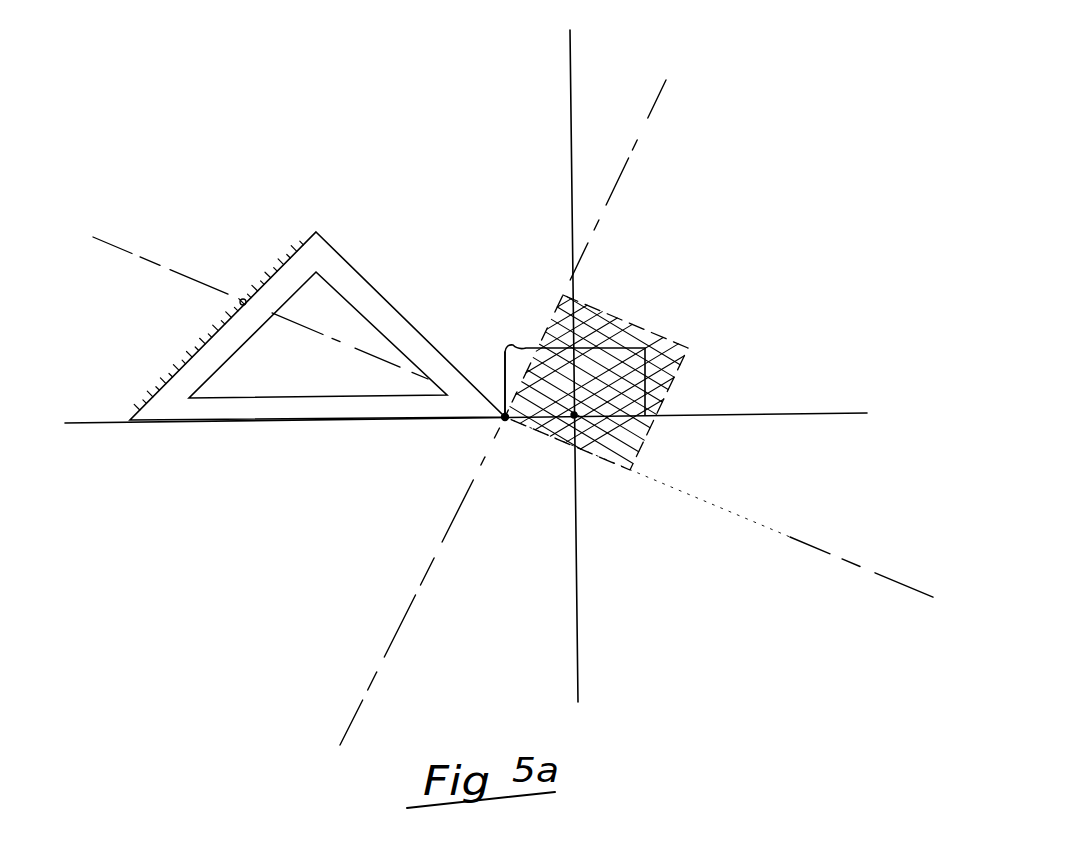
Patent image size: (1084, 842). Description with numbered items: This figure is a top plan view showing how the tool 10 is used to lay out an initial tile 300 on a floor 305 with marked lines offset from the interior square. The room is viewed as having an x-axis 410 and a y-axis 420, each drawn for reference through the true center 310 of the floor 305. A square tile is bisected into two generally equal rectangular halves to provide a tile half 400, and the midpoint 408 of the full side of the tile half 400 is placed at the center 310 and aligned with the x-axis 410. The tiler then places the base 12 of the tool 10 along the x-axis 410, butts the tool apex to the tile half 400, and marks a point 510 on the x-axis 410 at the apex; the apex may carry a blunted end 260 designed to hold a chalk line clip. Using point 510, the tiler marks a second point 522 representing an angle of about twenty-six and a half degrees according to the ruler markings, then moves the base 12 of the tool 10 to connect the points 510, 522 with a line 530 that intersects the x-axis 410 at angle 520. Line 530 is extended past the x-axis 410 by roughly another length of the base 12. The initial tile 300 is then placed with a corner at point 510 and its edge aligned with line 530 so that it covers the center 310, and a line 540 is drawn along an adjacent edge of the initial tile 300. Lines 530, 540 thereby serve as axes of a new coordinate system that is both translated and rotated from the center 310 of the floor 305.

The tool 10 is at (330, 158).
The base 12 is at (265, 410).
The blunted end 260 is at (483, 407).
The initial tile 300 is at (668, 392).
The floor 305 is at (838, 157).
The center 310 is at (574, 416).
The tile half 400 is at (505, 417).
The midpoint 408 is at (574, 415).
The x-axis 410 is at (835, 413).
The y-axis 420 is at (571, 52).
The point 510 is at (503, 417).
The angle 520 is at (123, 253).
The point 522 is at (243, 298).
The line 530 is at (810, 543).
The line 540 is at (403, 615).